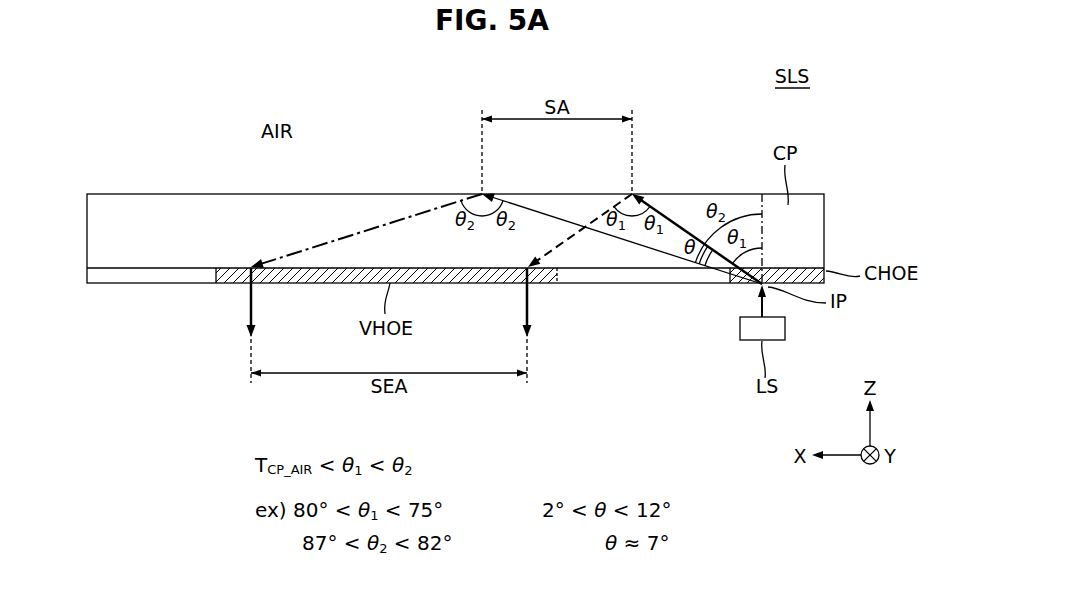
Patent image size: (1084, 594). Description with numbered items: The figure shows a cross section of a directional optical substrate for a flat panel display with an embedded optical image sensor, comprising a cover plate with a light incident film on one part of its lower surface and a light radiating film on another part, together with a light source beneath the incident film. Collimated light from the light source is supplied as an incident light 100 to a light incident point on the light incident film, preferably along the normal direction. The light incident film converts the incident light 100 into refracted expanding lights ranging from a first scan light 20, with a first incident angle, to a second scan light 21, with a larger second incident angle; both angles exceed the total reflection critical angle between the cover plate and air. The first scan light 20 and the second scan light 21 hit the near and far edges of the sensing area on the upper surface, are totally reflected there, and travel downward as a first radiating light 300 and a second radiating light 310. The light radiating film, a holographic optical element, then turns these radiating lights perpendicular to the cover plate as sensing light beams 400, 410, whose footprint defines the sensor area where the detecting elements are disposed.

The first scan light 20 is at (690, 234).
The second scan light 21 is at (527, 208).
The first radiating light 300 is at (583, 228).
The second radiating light 310 is at (366, 230).
The sensing light beam 400 is at (530, 302).
The sensing light beam 410 is at (248, 302).
The incident light 100 is at (764, 308).